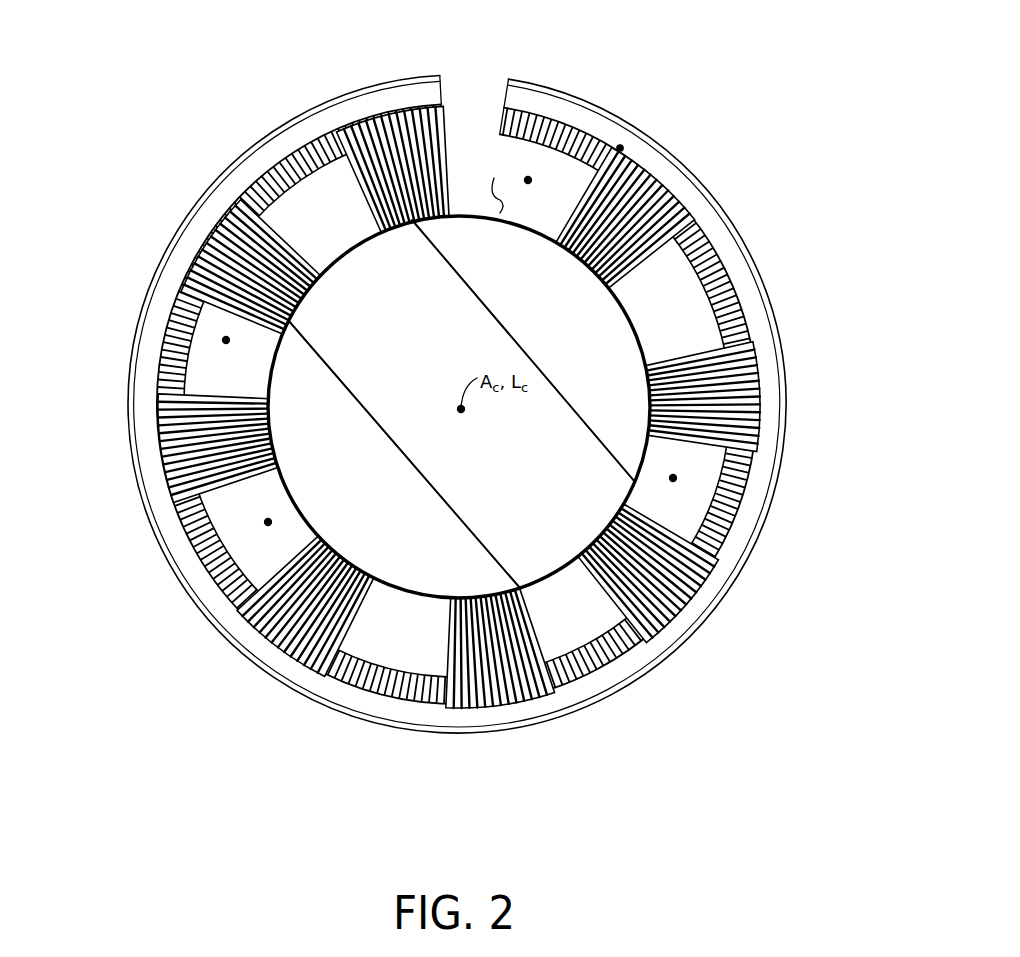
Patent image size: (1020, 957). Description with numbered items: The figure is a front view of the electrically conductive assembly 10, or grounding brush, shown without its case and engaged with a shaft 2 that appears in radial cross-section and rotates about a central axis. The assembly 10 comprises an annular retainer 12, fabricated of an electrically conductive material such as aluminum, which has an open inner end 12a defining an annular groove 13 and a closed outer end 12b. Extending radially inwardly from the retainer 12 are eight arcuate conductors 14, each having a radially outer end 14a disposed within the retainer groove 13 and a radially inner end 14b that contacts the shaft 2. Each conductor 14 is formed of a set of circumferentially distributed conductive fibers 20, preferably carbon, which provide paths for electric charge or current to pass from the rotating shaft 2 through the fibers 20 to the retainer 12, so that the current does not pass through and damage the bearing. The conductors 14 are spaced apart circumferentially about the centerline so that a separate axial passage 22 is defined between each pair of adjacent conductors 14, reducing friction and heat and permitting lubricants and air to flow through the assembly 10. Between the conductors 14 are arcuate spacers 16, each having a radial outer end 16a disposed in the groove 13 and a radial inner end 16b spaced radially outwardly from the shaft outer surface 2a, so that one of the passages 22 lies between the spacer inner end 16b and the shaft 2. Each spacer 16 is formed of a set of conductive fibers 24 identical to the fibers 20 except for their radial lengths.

The shaft 2 is at (650, 323).
The shaft outer surface 2a is at (490, 183).
The conductive assembly 10 is at (163, 707).
The annular retainer 12 is at (330, 84).
The open inner end 12a is at (647, 187).
The closed outer end 12b is at (593, 117).
The annular groove 13 is at (632, 140).
The arcuate conductor 14 is at (318, 306).
The radially outer end 14a is at (400, 98).
The radially inner end 14b is at (318, 293).
The arcuate spacer 16 is at (263, 170).
The radial outer end 16a is at (275, 140).
The radial inner end 16b is at (295, 178).
The conductive fiber 20 is at (203, 388).
The axial passage 22 is at (226, 340).
The conductive fiber 24 is at (695, 234).